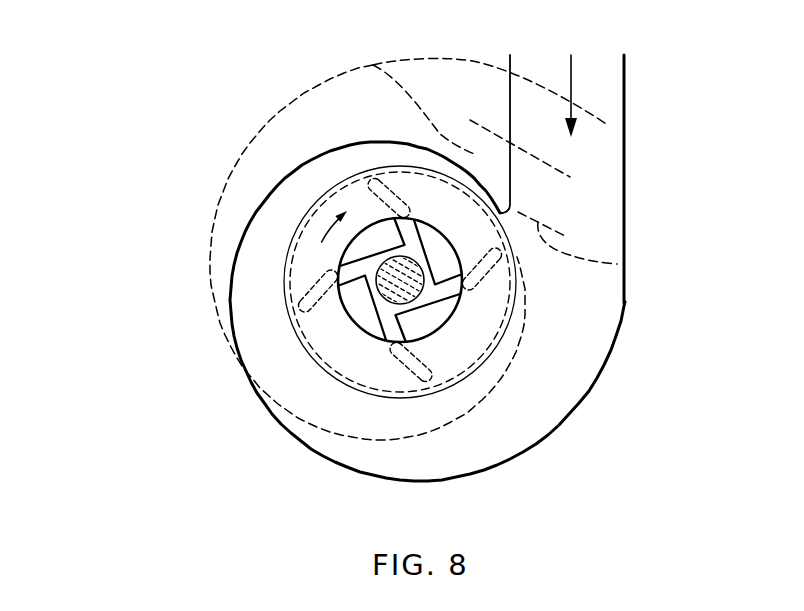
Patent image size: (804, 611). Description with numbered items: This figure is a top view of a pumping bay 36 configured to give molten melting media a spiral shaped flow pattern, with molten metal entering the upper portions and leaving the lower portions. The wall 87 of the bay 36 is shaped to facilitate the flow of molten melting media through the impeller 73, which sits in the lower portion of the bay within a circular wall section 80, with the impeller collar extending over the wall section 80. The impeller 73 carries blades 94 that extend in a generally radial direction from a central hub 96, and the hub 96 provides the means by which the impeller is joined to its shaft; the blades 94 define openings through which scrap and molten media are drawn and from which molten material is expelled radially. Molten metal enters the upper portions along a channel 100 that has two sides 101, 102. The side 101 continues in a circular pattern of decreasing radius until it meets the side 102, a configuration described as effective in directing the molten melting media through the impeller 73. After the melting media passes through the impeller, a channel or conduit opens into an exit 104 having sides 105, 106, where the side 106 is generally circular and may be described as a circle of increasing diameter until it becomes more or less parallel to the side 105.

The bay 36 is at (112, 295).
The impeller 73 is at (288, 345).
The circular wall section 80 is at (355, 336).
The wall 87 is at (582, 383).
The blades 94 is at (388, 320).
The central hub 96 is at (423, 278).
The channel 100 is at (600, 155).
The side 101 is at (624, 107).
The side 102 is at (510, 55).
The exit 104 is at (370, 65).
The side 105 is at (617, 264).
The side 106 is at (477, 62).